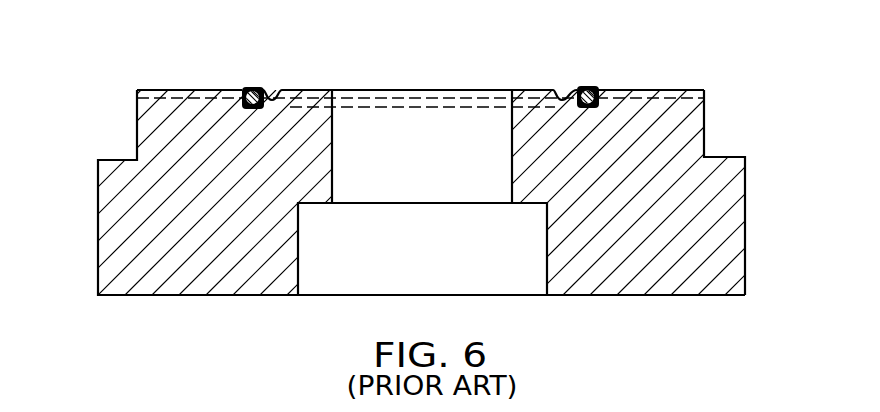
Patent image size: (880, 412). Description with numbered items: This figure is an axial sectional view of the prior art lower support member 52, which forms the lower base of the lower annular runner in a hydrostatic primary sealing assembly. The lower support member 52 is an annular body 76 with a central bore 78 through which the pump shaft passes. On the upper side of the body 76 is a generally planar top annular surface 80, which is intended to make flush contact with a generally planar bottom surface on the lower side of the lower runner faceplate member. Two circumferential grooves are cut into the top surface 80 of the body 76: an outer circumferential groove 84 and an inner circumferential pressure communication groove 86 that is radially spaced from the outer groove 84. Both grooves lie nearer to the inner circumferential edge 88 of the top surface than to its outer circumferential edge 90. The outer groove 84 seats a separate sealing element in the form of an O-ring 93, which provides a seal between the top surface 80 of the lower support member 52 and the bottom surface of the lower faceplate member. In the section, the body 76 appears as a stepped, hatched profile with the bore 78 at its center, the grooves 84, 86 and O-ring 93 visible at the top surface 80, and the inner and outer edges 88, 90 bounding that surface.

The lower support member 52 is at (440, 147).
The annular body 76 is at (750, 203).
The central bore 78 is at (500, 137).
The top annular surface 80 is at (197, 88).
The outer circumferential groove 84 is at (587, 87).
The inner circumferential pressure communication groove 86 is at (562, 97).
The inner circumferential edge 88 is at (335, 98).
The outer circumferential edge 90 is at (137, 97).
The O-ring 93 is at (250, 88).